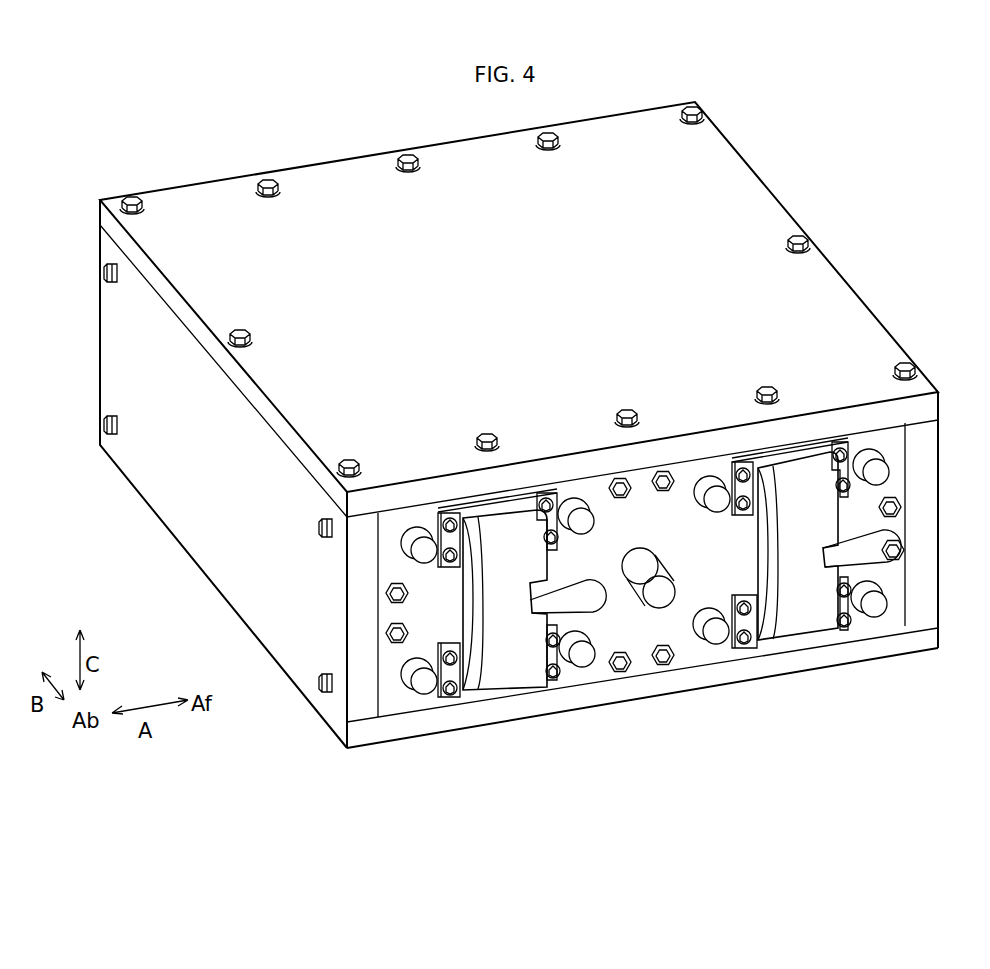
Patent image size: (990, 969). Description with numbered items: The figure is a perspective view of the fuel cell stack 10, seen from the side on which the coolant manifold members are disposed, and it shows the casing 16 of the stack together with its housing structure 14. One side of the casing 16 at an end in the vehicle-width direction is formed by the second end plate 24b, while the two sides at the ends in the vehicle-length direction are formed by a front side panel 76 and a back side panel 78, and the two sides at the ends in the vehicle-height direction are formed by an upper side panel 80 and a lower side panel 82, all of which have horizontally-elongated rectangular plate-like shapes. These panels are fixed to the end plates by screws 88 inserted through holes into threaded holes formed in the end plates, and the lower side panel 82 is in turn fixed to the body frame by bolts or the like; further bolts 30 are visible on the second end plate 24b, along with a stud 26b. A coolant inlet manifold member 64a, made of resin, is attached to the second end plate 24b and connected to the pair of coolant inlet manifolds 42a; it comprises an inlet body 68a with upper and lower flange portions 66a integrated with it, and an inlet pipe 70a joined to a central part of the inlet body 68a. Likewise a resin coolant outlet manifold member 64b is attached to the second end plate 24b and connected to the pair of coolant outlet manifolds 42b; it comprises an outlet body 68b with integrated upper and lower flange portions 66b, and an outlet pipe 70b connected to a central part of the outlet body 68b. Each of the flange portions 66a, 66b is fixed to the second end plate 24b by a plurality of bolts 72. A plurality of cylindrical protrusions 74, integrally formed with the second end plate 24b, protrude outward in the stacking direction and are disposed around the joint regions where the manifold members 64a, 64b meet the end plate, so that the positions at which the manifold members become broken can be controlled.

The battery pack 10 is at (388, 126).
The housing 14 is at (772, 232).
The casing 16 is at (790, 199).
The second end plate 24b is at (895, 623).
The stud 26b is at (640, 572).
The bolt 30 is at (662, 487).
The coolant inlet manifolds 42a is at (482, 530).
The coolant outlet manifolds 42b is at (780, 483).
The coolant inlet manifold member 64a is at (531, 676).
The coolant outlet manifold member 64b is at (825, 628).
The flange portions 66a is at (548, 527).
The flange portions 66b is at (833, 470).
The inlet body 68a is at (513, 528).
The outlet body 68b is at (807, 483).
The inlet pipe 70a is at (572, 592).
The outlet pipe 70b is at (877, 553).
The bolts 72 is at (450, 513).
The protrusions 74 is at (573, 507).
The front side panel 76 is at (928, 444).
The back side panel 78 is at (270, 597).
The upper side panel 80 is at (818, 284).
The lower side panel 82 is at (323, 712).
The screws 88 is at (549, 155).